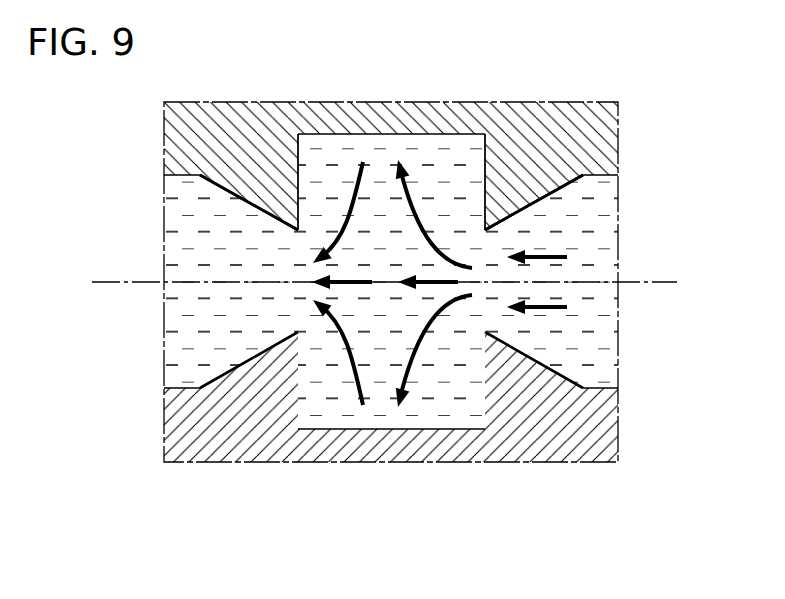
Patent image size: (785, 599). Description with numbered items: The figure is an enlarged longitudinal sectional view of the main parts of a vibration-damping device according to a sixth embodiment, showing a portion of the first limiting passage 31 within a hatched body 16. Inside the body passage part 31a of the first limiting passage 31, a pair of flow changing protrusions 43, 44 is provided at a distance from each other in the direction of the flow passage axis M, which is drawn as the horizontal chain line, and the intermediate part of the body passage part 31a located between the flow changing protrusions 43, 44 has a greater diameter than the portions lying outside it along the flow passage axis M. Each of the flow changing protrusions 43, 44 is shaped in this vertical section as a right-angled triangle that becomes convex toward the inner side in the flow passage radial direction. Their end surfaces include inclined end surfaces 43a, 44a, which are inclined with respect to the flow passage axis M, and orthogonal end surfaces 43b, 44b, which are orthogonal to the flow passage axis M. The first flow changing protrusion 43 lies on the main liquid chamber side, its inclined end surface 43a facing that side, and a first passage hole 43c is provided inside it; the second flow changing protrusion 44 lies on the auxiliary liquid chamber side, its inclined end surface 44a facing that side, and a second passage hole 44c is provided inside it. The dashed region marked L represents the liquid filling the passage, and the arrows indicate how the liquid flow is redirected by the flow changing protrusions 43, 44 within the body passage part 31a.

The nozzle body 16 is at (402, 470).
The first limiting passage 31 is at (583, 323).
The body passage part 31a is at (183, 388).
The first flow changing protrusion 43 is at (523, 197).
The inclined end surface 43a is at (523, 223).
The orthogonal end surface 43b is at (485, 233).
The first passage hole 43c is at (491, 232).
The second flow changing protrusion 44 is at (257, 194).
The inclined end surface 44a is at (268, 218).
The orthogonal end surface 44b is at (298, 214).
The second passage hole 44c is at (292, 232).
The liquid L is at (605, 372).
The flow passage axis M is at (677, 282).